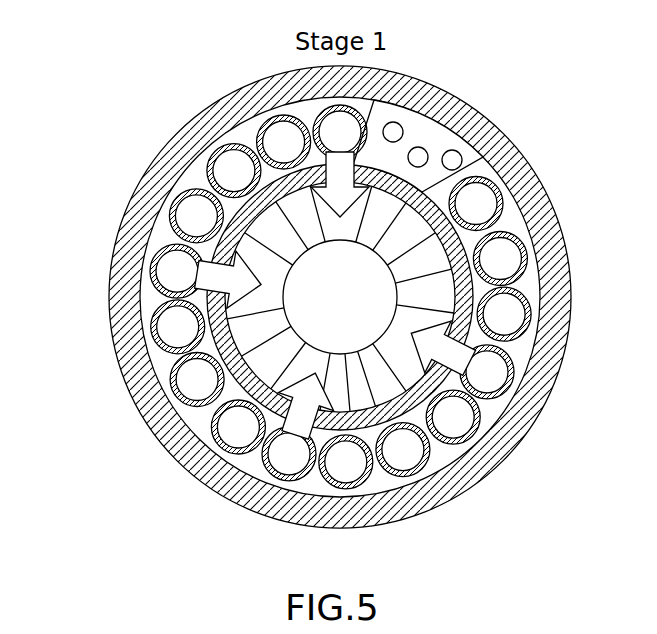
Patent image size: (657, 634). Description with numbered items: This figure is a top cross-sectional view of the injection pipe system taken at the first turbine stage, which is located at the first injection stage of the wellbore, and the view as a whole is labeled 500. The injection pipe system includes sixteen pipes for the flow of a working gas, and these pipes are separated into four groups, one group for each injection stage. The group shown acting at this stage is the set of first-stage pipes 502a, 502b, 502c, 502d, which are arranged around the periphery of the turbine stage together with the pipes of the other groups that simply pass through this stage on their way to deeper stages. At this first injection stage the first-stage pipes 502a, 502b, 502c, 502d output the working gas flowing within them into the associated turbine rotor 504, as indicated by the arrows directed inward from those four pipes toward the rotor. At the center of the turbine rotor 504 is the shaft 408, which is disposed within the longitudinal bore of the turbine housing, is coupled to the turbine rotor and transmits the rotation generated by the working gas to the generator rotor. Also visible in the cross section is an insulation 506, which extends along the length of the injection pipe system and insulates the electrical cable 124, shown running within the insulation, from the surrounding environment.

The heat exchanger stage assembly 500 is at (557, 86).
The first-stage pipe 502a is at (323, 108).
The first-stage pipe 502b is at (151, 268).
The first-stage pipe 502c is at (282, 481).
The first-stage pipe 502d is at (500, 404).
The turbine rotor 504 is at (268, 228).
The insulation 506 is at (431, 120).
The electrical cable 124 is at (458, 152).
The shaft 408 is at (325, 312).